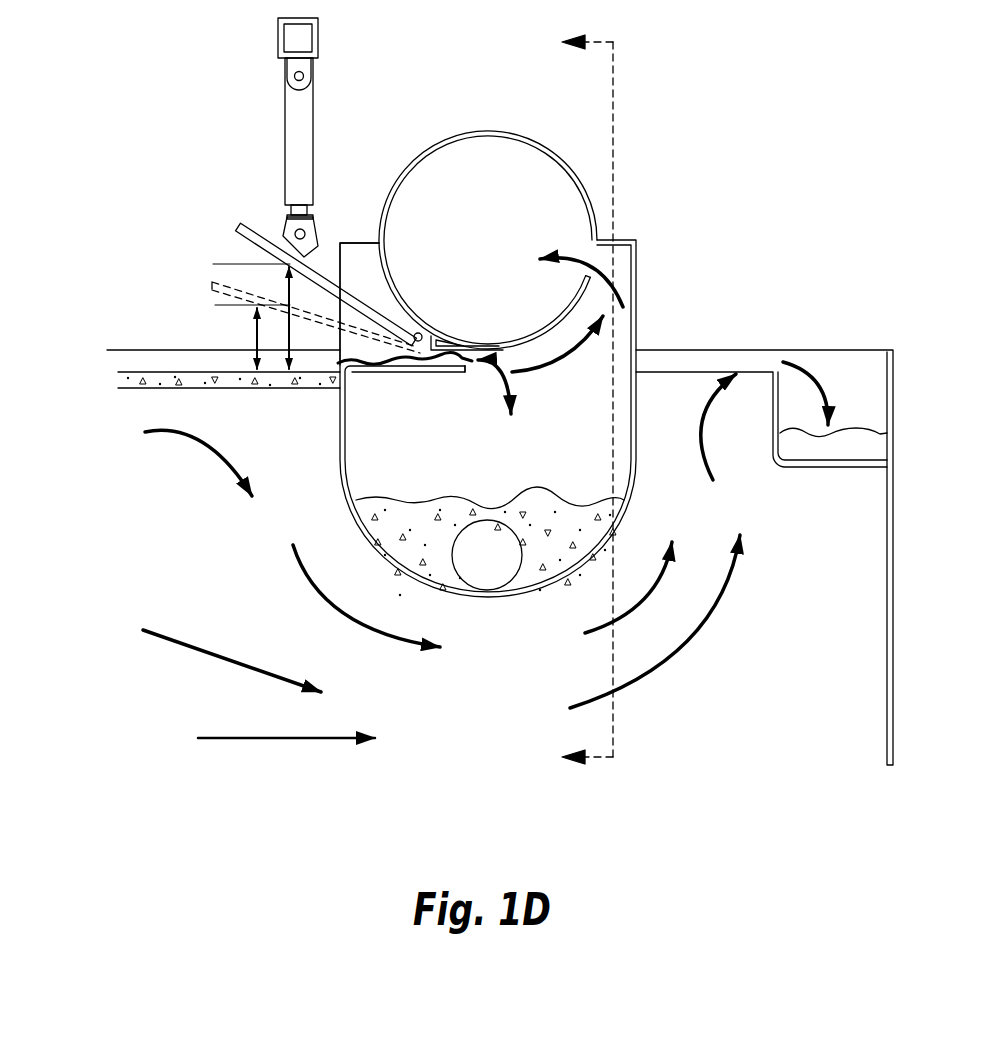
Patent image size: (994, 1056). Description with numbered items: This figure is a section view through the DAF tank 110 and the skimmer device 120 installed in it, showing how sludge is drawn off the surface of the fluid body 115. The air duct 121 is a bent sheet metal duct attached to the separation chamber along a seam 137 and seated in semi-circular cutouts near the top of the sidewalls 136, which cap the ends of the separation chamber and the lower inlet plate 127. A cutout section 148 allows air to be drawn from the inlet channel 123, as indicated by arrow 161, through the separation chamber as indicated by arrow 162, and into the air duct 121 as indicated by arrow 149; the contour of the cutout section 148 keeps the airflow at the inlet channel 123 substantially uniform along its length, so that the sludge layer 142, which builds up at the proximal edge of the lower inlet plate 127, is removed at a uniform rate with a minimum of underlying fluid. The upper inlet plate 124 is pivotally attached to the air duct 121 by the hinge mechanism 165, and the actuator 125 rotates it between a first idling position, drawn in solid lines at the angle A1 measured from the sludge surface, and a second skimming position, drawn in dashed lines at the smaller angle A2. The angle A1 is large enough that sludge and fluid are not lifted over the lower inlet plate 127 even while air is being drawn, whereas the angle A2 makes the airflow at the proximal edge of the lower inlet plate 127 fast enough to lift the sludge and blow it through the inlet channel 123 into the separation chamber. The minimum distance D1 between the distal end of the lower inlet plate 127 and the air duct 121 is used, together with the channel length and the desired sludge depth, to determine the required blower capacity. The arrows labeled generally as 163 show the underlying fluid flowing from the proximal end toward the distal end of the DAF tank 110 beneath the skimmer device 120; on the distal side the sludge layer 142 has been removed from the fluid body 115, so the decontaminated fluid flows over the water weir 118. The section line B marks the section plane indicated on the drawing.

The DAF tank 110 is at (888, 513).
The fluid body 115 is at (155, 412).
The water weir 118 is at (775, 384).
The skimmer device 120 is at (648, 136).
The air duct 121 is at (531, 130).
The inlet channel 123 is at (483, 364).
The upper inlet plate 124 is at (240, 224).
The actuator 125 is at (297, 150).
The lower inlet plate 127 is at (402, 367).
The sidewall 136 is at (358, 252).
The seam 137 is at (639, 241).
The sludge layer 142 is at (146, 383).
The cutout section 148 is at (626, 269).
The arrow indicating airflow into air duct 149 is at (550, 200).
The arrow indicating airflow from inlet channel 161 is at (200, 272).
The arrow indicating airflow through separation chamber 162 is at (607, 323).
The arrows indicating underlying fluid flow 163 is at (226, 494).
The hinge mechanism 165 is at (423, 338).
The idling position angle A1 is at (307, 310).
The skimming position angle A2 is at (254, 347).
The minimum distance D1 is at (455, 366).
The section line B is at (587, 403).